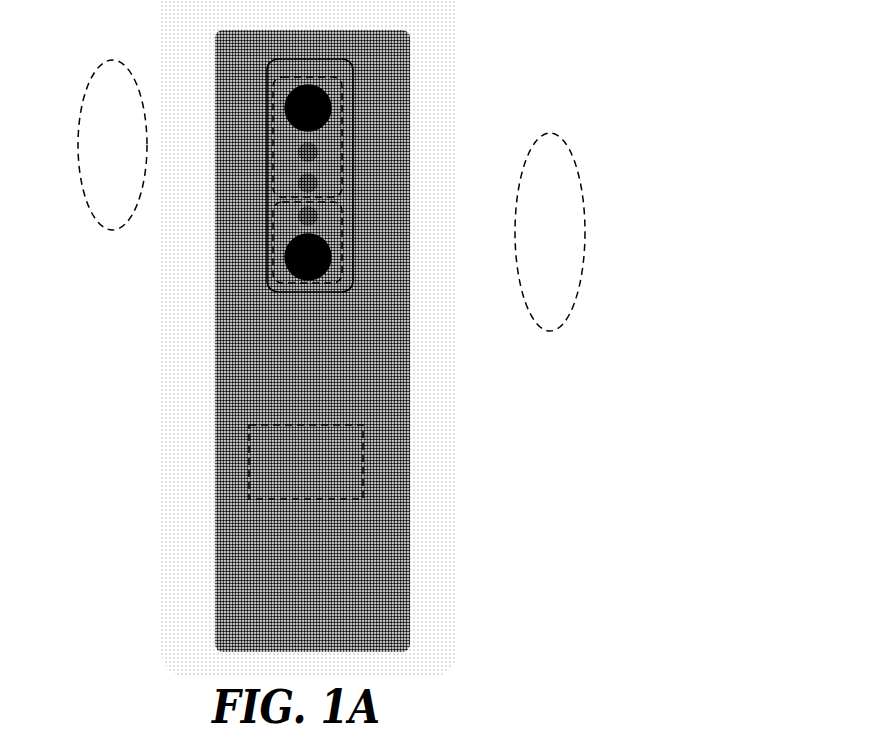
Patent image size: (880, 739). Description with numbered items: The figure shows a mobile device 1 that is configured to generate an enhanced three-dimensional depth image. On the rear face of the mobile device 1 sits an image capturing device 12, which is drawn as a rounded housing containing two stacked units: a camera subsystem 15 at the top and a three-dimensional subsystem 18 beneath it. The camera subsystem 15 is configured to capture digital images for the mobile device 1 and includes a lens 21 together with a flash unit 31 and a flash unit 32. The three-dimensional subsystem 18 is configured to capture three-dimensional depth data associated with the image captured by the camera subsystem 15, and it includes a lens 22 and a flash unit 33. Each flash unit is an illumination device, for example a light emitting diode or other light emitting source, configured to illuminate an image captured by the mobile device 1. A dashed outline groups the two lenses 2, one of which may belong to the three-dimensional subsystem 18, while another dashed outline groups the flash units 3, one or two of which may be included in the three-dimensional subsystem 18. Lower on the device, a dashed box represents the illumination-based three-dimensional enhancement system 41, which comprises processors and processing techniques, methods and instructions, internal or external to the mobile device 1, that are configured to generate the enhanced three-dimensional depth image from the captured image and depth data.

The mobile device 1 is at (453, 482).
The lenses 2 is at (579, 283).
The flash units 3 is at (84, 188).
The image capturing device 12 is at (352, 285).
The camera subsystem 15 is at (277, 78).
The 3D subsystem 18 is at (267, 275).
The lens 21 is at (330, 115).
The lens 22 is at (331, 262).
The flash unit 31 is at (298, 153).
The flash unit 32 is at (298, 183).
The flash unit 33 is at (298, 216).
The illumination-based 3D enhancement system 41 is at (249, 480).